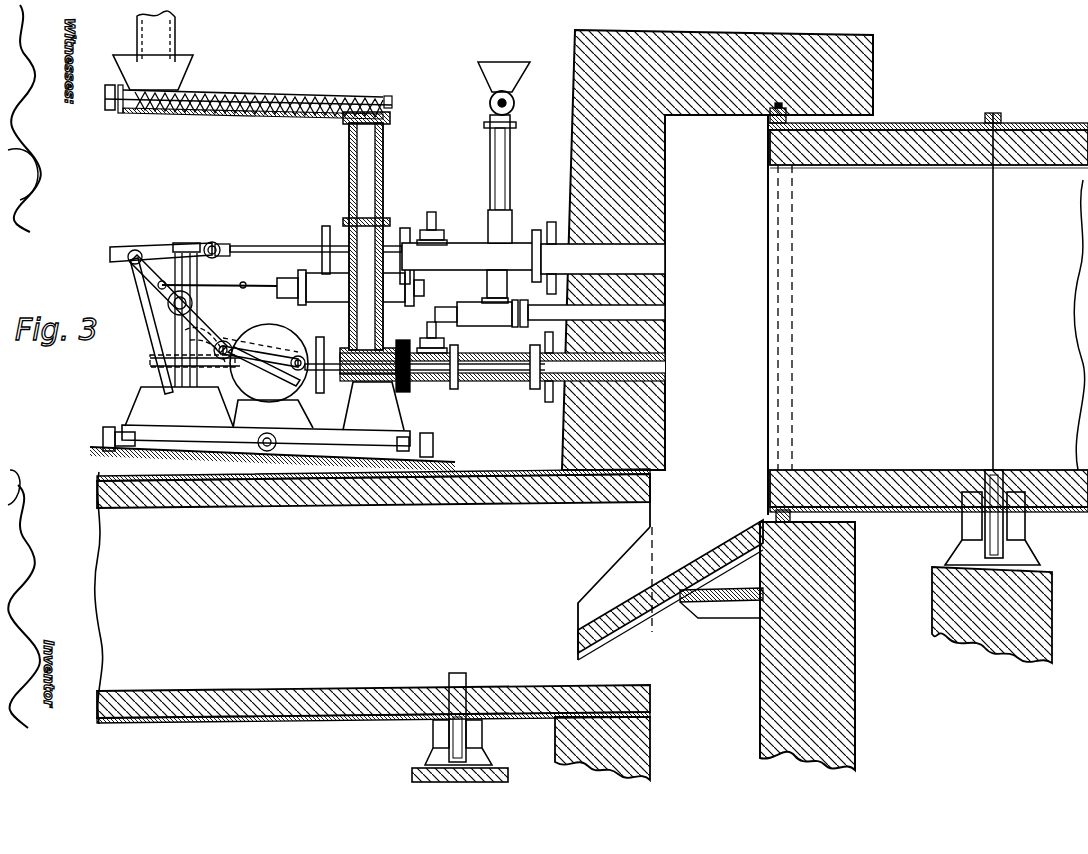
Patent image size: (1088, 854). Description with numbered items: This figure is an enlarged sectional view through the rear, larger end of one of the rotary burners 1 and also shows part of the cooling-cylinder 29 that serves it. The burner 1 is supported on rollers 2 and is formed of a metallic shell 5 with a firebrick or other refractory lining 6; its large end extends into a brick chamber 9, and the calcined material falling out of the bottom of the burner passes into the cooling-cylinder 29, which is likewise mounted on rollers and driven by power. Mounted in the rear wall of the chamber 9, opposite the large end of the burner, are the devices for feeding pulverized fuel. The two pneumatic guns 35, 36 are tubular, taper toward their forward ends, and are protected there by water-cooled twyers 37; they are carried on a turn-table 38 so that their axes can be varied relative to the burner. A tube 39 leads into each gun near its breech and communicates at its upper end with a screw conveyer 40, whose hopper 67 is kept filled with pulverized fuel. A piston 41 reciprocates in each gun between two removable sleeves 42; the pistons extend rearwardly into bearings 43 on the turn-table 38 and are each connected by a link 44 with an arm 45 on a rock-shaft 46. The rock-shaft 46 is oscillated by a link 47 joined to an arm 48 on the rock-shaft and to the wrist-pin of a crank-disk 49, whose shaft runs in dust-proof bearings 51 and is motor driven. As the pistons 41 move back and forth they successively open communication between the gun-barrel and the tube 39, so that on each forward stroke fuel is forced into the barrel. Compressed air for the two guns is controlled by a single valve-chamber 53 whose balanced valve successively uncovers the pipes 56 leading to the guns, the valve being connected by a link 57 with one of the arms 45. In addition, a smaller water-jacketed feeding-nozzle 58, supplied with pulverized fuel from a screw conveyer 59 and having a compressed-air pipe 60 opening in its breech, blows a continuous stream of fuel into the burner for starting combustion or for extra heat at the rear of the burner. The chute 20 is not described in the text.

The rotary burner 1 is at (1008, 103).
The rollers 2 is at (992, 538).
The metallic shell 5 is at (1040, 124).
The refractory lining 6 is at (1050, 165).
The chamber 9 is at (717, 272).
The chute 20 is at (716, 622).
The cooling-cylinder 29 is at (372, 624).
The gun 35 is at (502, 367).
The gun 36 is at (466, 244).
The twyers 37 is at (673, 360).
The turn-table 38 is at (272, 448).
The tube 39 is at (368, 187).
The screw conveyer 40 is at (248, 91).
The piston 41 is at (292, 248).
The sleeves 42 is at (380, 385).
The bearings 43 is at (190, 243).
The link 44 is at (158, 246).
The arm 45 is at (152, 282).
The rock-shaft 46 is at (194, 303).
The link 47 is at (270, 366).
The arm 48 is at (195, 340).
The crank-disk 49 is at (280, 338).
The dust-proof bearings 51 is at (219, 340).
The valve-chamber 53 is at (335, 302).
The pipes 56 is at (432, 222).
The link 57 is at (225, 285).
The feeding-nozzle 58 is at (662, 313).
The screw conveyer 59 is at (515, 104).
The compressed-air pipe 60 is at (462, 308).
The hopper 67 is at (161, 50).